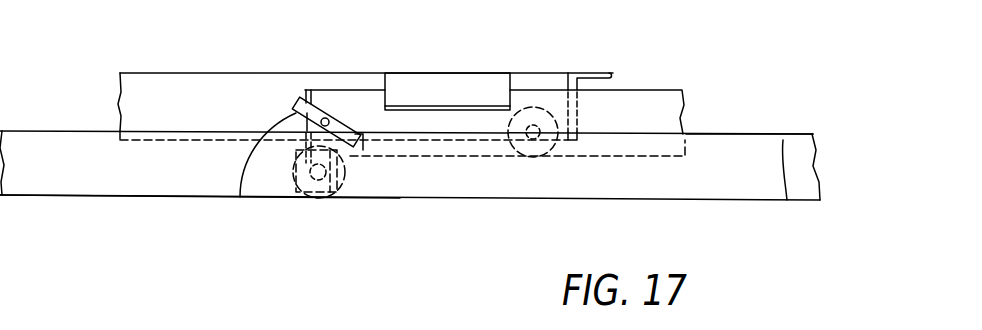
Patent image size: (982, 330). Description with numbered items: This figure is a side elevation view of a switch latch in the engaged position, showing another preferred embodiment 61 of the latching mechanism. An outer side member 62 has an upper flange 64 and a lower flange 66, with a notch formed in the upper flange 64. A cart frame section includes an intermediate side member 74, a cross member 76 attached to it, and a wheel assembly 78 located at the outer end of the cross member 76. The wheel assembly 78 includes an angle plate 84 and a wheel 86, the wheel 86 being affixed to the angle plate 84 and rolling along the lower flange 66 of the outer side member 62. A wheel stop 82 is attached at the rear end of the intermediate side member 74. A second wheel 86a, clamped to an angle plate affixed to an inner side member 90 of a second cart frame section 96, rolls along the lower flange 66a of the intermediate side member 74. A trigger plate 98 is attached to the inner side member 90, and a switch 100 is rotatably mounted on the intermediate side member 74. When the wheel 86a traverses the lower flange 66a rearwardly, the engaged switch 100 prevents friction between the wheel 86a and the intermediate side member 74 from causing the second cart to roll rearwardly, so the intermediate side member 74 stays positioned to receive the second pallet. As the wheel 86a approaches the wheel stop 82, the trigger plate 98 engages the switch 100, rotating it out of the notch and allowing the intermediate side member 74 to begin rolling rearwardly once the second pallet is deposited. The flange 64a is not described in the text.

The latching mechanism embodiment 61 is at (138, 231).
The outer side member 62 is at (735, 172).
The upper flange 64 is at (717, 134).
The hook flange 64a is at (622, 90).
The lower flange 66 is at (783, 140).
The lower flange 66a is at (577, 158).
The intermediate side member 74 is at (650, 110).
The cross member 76 is at (323, 199).
The wheel assembly 78 is at (356, 199).
The wheel stop 82 is at (240, 197).
The angle plate 84 is at (260, 199).
The wheel 86 is at (288, 199).
The wheel 86a is at (548, 103).
The inner side member 90 is at (238, 73).
The second cart frame section 96 is at (156, 73).
The trigger plate 98 is at (462, 100).
The switch 100 is at (296, 103).